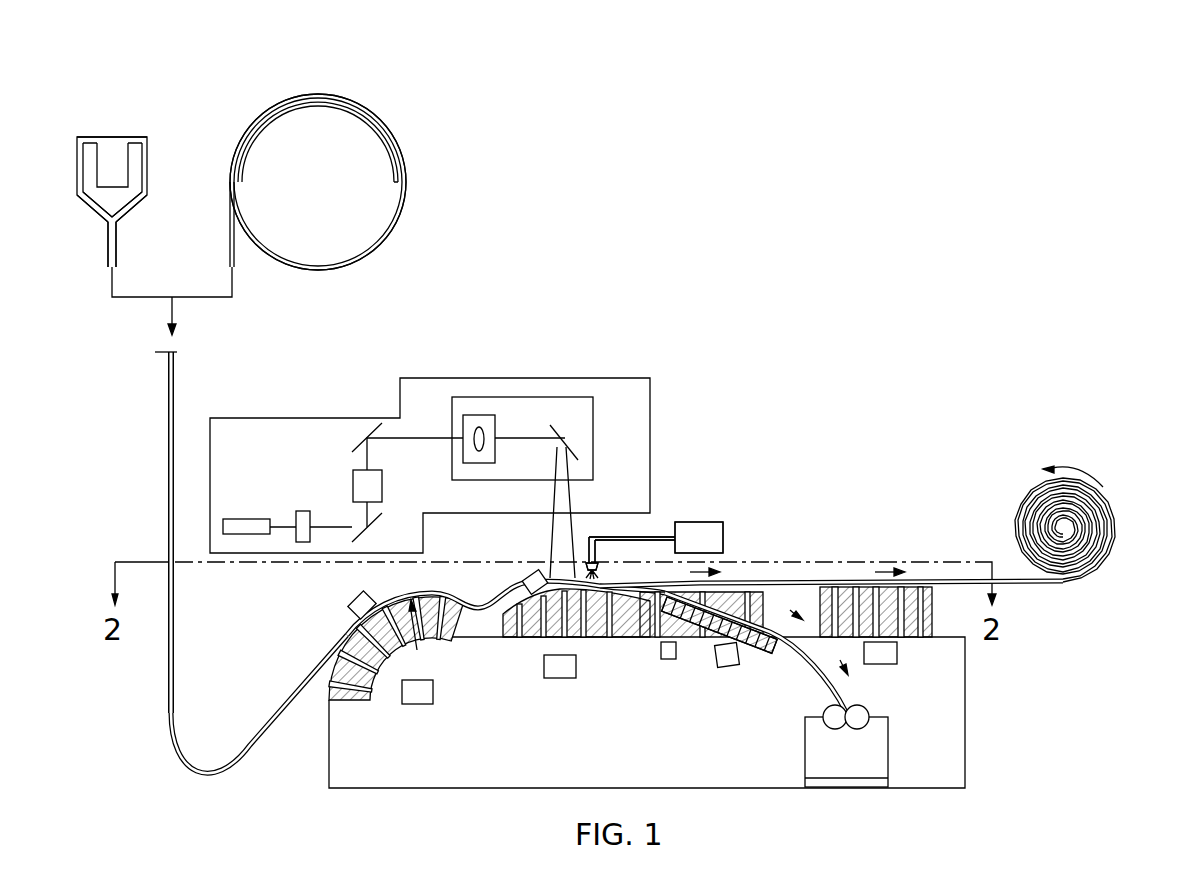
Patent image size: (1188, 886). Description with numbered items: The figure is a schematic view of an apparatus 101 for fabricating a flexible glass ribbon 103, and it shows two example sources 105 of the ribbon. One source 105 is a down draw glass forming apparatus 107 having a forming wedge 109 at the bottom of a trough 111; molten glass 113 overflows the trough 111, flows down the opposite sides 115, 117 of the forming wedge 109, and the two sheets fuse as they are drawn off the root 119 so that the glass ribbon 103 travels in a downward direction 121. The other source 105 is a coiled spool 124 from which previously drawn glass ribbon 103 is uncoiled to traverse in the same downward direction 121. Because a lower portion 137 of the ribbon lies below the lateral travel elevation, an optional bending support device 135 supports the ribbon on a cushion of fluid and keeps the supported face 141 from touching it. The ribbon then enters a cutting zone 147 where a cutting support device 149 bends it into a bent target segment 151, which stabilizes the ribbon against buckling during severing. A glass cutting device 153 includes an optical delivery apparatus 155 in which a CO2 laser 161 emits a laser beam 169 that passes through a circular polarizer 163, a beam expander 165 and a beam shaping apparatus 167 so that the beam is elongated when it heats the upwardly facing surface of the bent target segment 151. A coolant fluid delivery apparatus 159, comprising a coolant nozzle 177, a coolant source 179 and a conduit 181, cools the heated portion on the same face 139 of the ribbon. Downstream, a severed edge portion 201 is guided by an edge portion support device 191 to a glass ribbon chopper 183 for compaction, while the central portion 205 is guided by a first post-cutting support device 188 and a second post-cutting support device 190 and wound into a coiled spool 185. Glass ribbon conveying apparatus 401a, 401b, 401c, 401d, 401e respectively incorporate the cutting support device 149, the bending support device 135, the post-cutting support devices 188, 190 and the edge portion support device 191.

The apparatus 101 is at (828, 264).
The glass ribbon 103 is at (168, 372).
The source of glass ribbon 105 is at (438, 83).
The down draw glass forming apparatus 107 is at (136, 118).
The forming wedge 109 is at (122, 210).
The trough 111 is at (120, 160).
The molten glass 113 is at (105, 136).
The first side of forming wedge 115 is at (80, 196).
The second side of forming wedge 117 is at (147, 196).
The root 119 is at (108, 224).
The downward direction 121 is at (172, 312).
The coiled spool 124 is at (281, 280).
The bending support device 135 is at (432, 640).
The lower portion of glass ribbon 137 is at (240, 770).
The face of glass ribbon 139 is at (432, 585).
The supported face of glass ribbon 141 is at (419, 682).
The cutting zone 147 is at (625, 676).
The cutting support device 149 is at (580, 667).
The bent target segment 151 is at (545, 579).
The glass cutting device 153 is at (664, 452).
The optical delivery apparatus 155 is at (576, 363).
The coolant fluid delivery apparatus 159 is at (707, 503).
The CO2 laser 161 is at (240, 518).
The circular polarizer 163 is at (303, 510).
The beam expander 165 is at (383, 488).
The beam shaping apparatus 167 is at (478, 414).
The laser beam 169 is at (282, 526).
The coolant nozzle 177 is at (598, 552).
The coolant source 179 is at (723, 528).
The conduit 181 is at (645, 537).
The glass ribbon chopper 183 is at (805, 738).
The coiled spool 185 is at (1102, 594).
The first post-cutting support device 188 is at (678, 650).
The second post-cutting support device 190 is at (897, 652).
The edge portion support device 191 is at (740, 650).
The edge portion 201 is at (822, 680).
The central portion 205 is at (770, 578).
The glass ribbon conveying apparatus 401a is at (538, 694).
The glass ribbon conveying apparatus 401b is at (410, 715).
The glass ribbon conveying apparatus 401c is at (660, 675).
The glass ribbon conveying apparatus 401d is at (897, 675).
The glass ribbon conveying apparatus 401e is at (724, 681).